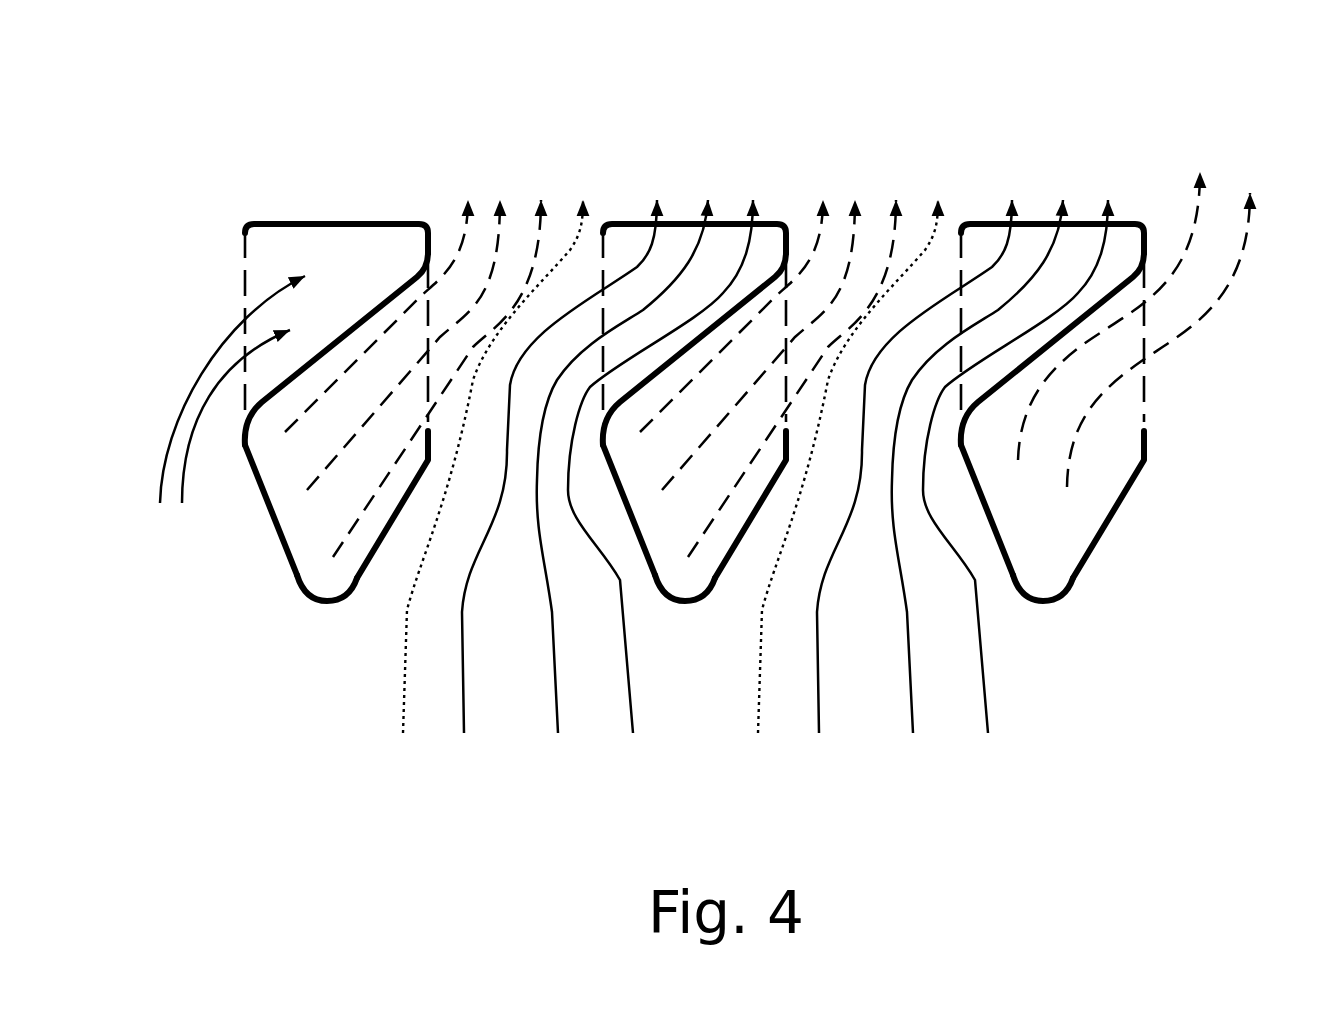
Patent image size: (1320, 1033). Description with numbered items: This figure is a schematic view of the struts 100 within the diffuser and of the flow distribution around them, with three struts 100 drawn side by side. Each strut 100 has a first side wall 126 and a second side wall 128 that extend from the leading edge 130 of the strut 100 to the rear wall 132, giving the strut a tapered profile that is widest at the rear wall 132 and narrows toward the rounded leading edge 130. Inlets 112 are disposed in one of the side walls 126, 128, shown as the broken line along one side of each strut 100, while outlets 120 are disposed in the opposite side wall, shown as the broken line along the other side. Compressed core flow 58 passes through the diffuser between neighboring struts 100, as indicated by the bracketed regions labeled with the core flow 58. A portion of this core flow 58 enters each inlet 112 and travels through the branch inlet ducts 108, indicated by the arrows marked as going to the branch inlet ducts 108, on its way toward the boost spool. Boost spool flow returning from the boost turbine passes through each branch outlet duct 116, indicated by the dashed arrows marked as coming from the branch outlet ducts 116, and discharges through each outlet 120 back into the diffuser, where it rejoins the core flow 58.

The core flow 58 is at (645, 764).
The strut 100 is at (698, 451).
The branch inlet duct 108 is at (1128, 190).
The inlet 112 is at (244, 274).
The branch outlet duct 116 is at (1290, 168).
The outlet 120 is at (427, 418).
The first side wall 126 is at (255, 490).
The second side wall 128 is at (375, 558).
The leading edge 130 is at (325, 604).
The rear wall 132 is at (311, 222).